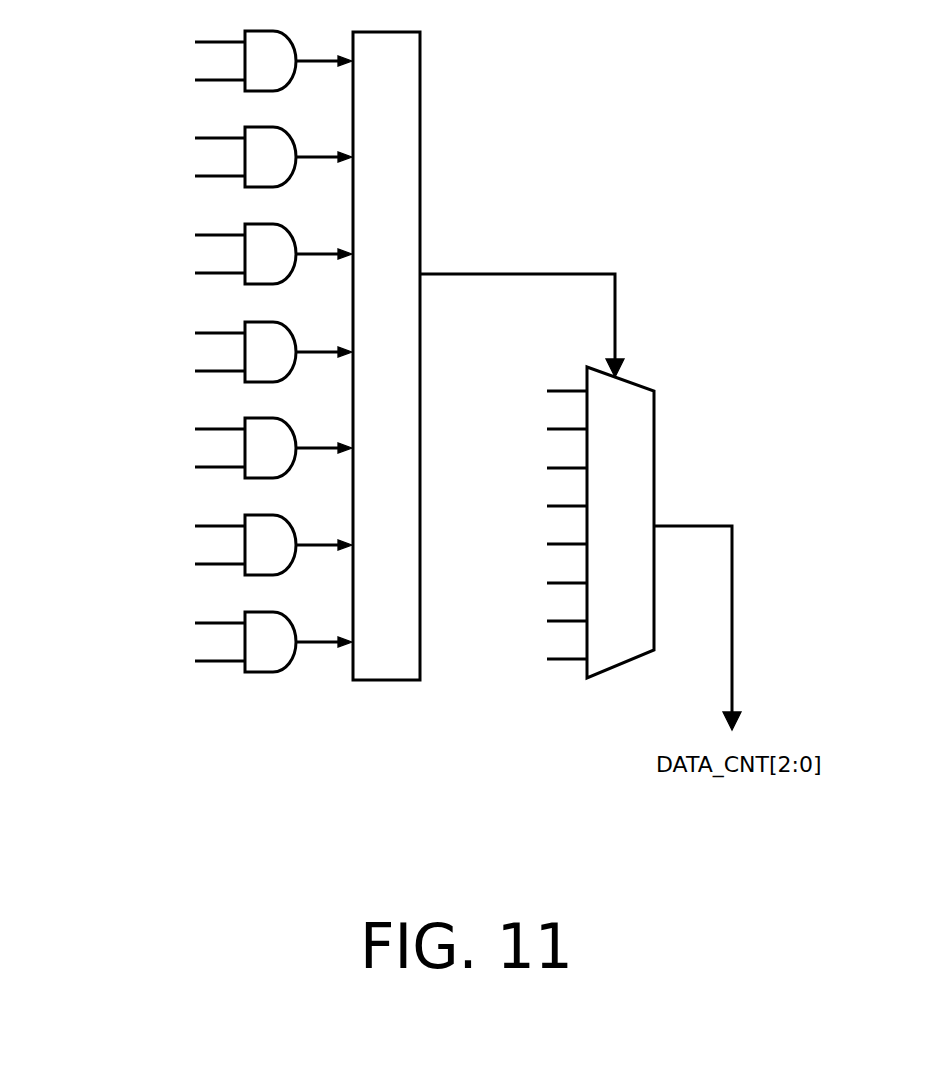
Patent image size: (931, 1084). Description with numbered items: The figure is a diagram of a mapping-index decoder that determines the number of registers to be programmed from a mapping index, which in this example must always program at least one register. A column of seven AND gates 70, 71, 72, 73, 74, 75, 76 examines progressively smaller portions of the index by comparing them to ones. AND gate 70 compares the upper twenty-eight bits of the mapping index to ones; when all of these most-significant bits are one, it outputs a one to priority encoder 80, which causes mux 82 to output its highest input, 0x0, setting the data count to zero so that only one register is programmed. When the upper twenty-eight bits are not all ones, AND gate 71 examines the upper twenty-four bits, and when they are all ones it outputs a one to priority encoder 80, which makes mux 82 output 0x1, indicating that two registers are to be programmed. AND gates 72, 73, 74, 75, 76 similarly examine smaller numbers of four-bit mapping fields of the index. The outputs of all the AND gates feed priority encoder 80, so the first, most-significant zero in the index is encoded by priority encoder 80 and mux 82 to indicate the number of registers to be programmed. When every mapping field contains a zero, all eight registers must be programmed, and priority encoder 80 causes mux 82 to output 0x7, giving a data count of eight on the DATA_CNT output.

The AND gate 70 is at (256, 77).
The AND gate 71 is at (256, 173).
The AND gate 72 is at (256, 270).
The AND gate 73 is at (256, 368).
The AND gate 74 is at (256, 464).
The AND gate 75 is at (256, 561).
The AND gate 76 is at (256, 658).
The priority encoder 80 is at (371, 619).
The mux 82 is at (613, 629).